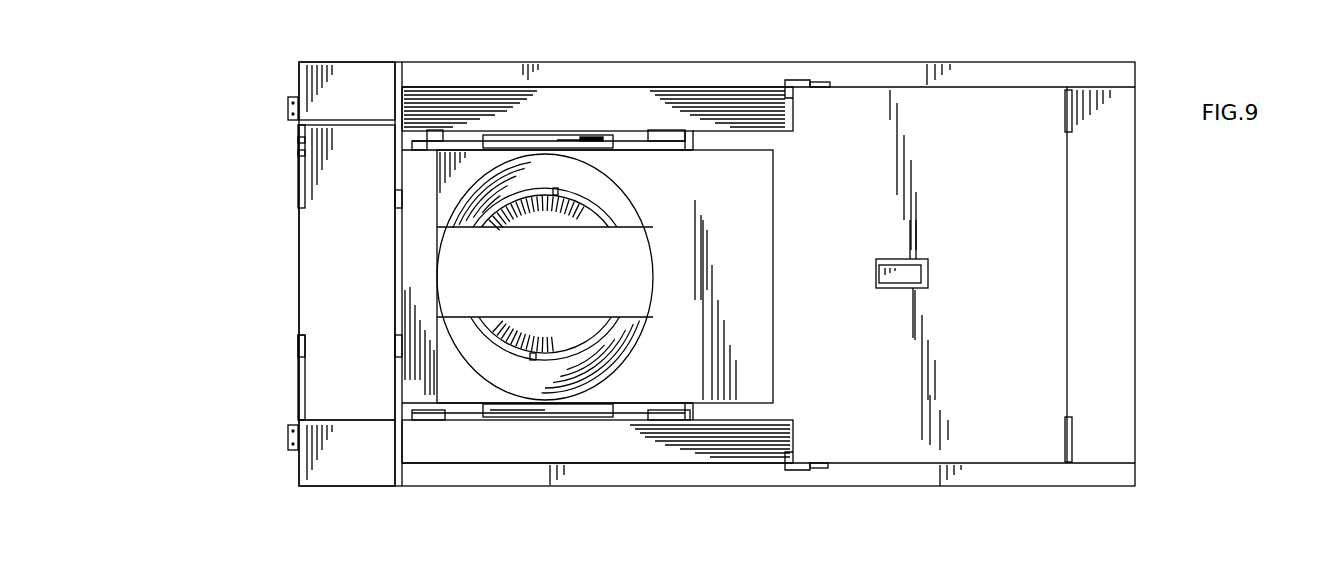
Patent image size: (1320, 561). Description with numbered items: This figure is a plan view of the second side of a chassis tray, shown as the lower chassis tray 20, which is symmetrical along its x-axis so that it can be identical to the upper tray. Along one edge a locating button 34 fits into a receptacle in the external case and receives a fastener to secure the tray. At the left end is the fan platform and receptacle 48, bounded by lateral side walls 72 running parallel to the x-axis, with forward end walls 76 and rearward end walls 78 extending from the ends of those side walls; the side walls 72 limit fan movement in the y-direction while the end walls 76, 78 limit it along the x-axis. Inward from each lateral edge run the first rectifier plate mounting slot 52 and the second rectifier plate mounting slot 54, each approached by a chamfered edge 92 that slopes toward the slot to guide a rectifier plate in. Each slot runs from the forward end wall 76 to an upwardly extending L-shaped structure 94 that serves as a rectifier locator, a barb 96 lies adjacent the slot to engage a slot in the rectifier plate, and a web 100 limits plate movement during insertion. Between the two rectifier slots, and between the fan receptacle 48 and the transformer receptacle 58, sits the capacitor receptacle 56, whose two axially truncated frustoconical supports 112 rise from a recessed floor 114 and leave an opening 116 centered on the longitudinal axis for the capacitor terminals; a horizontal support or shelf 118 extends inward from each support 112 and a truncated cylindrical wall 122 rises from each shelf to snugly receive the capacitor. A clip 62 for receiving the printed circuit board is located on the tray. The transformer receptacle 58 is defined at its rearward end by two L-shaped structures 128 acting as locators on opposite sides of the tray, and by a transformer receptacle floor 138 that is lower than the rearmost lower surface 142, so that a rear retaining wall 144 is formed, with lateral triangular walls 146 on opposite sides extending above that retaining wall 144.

The lower chassis tray 20 is at (977, 488).
The button 34 is at (290, 108).
The fan platform and receptacle 48 is at (318, 258).
The first rectifier plate mounting slot 52 is at (470, 420).
The second rectifier plate mounting slot 54 is at (467, 130).
The capacitor receptacle 56 is at (547, 213).
The transformer receptacle 58 is at (1030, 390).
The clip 62 is at (927, 280).
The lateral side wall 72 is at (377, 120).
The forward end wall 76 is at (395, 203).
The rearward end wall 78 is at (298, 172).
The chamfered edge 92 is at (452, 103).
The L-shaped structure (rectifier locator) 94 is at (687, 140).
The barb 96 is at (573, 137).
The web 100 is at (427, 130).
The frustoconical support 112 is at (627, 202).
The recessed floor 114 is at (757, 315).
The opening 116 is at (638, 278).
The horizontal support (shelf) 118 is at (577, 220).
The truncated cylindrical wall 122 is at (513, 205).
The L-shaped structure (transformer locator) 128 is at (807, 83).
The transformer receptacle floor 138 is at (860, 440).
The rearmost lower surface 142 is at (1118, 280).
The rear retaining wall 144 is at (1063, 220).
The lateral triangular wall 146 is at (1072, 120).